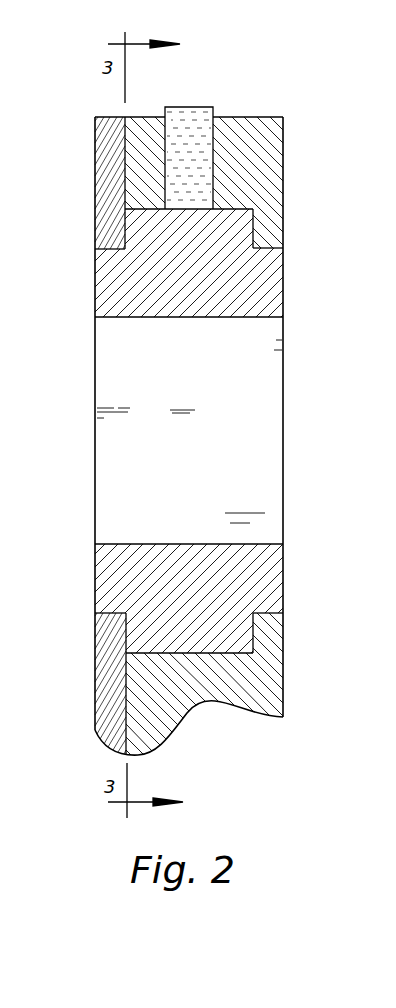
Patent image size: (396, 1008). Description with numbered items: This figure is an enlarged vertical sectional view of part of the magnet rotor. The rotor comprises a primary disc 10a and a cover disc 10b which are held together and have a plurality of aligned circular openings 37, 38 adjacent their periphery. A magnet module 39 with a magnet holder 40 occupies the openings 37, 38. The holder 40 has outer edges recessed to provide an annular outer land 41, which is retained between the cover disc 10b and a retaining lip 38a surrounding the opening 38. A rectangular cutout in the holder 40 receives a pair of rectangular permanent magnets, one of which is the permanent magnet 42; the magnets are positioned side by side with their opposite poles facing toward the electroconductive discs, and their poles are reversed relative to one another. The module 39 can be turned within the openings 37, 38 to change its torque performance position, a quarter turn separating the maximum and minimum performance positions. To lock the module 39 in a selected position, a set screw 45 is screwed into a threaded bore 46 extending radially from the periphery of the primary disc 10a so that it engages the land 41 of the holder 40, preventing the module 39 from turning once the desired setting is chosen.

The primary disc 10a is at (273, 150).
The cover disc 10b is at (110, 147).
The circular opening 37 is at (117, 248).
The circular opening 38 is at (273, 250).
The retaining lip 38a is at (277, 229).
The magnet module 39 is at (300, 284).
The magnet holder 40 is at (275, 298).
The annular outer land 41 is at (162, 222).
The permanent magnet 42 is at (258, 425).
The set screw 45 is at (180, 122).
The threaded bore 46 is at (214, 153).